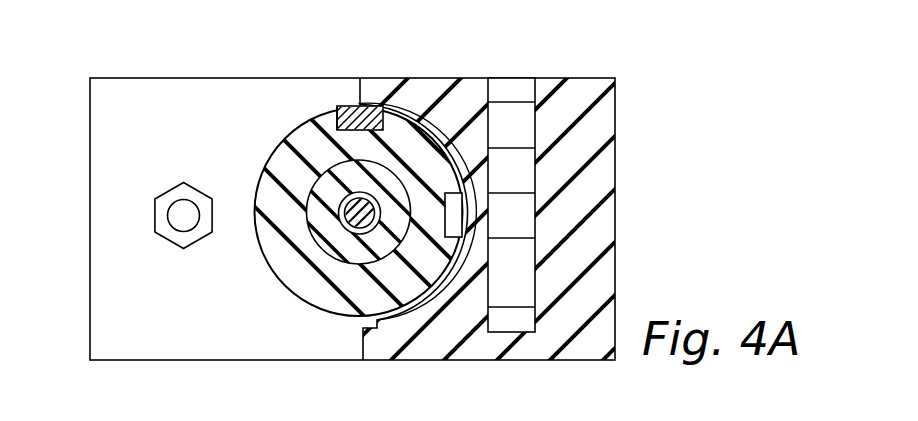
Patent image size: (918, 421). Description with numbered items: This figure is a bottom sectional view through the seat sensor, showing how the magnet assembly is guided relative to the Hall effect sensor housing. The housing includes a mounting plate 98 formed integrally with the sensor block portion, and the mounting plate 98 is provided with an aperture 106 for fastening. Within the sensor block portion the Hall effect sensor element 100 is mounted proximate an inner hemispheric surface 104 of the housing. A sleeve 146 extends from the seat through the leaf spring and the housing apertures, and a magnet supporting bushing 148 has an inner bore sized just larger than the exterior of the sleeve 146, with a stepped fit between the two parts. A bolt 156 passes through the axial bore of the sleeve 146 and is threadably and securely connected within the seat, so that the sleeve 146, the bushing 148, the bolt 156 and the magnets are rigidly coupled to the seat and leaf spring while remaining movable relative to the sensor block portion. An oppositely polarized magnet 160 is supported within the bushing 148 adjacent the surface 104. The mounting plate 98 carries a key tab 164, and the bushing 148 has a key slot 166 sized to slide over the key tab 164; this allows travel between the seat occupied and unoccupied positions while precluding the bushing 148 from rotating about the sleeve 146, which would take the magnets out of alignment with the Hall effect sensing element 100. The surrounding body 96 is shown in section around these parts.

The housing body 96 is at (588, 183).
The mounting plate portion 98 is at (137, 123).
The Hall effect sensor element 100 is at (530, 221).
The inner hemispheric surface 104 is at (387, 104).
The aperture 106 is at (184, 182).
The sleeve 146 is at (332, 237).
The magnet supporting bushing 148 is at (275, 243).
The bolt 156 is at (362, 226).
The magnet 160 is at (452, 238).
The key tab 164 is at (355, 110).
The key slot 166 is at (337, 116).